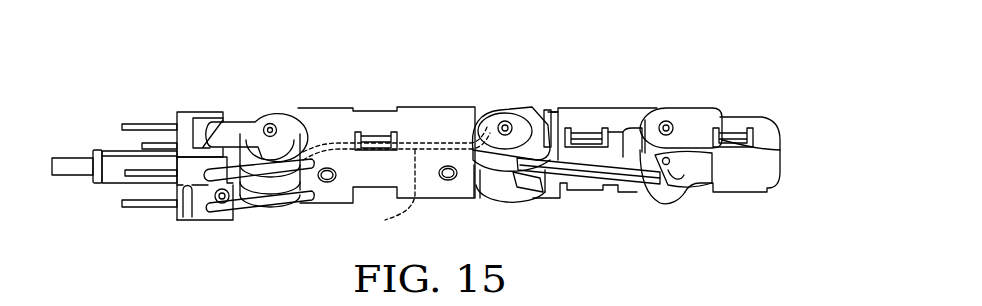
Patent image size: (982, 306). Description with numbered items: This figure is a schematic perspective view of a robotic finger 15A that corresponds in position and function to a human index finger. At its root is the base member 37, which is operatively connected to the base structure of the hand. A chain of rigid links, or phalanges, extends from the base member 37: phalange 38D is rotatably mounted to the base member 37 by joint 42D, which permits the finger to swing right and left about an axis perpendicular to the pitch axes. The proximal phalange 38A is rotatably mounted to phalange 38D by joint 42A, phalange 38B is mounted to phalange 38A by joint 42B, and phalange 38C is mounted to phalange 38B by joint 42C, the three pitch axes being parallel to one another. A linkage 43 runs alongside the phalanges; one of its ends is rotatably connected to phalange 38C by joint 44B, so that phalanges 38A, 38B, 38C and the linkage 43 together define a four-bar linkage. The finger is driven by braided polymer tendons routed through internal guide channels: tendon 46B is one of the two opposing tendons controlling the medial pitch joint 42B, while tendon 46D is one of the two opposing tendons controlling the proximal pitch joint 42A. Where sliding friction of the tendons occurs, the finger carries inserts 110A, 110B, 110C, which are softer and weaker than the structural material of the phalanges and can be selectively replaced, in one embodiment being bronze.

The linkage assembly 15A is at (779, 69).
The base member 37 is at (185, 127).
The proximal phalange 38A is at (440, 125).
The phalange 38B is at (585, 122).
The phalange 38C is at (763, 129).
The phalange 38D is at (240, 123).
The joint 42A is at (270, 127).
The joint 42B is at (503, 127).
The joint 42C is at (668, 127).
The joint 42D is at (222, 204).
The linkage 43 is at (620, 184).
The joint 44B is at (673, 160).
The tendon 46B is at (243, 178).
The tendon 46D is at (287, 207).
The insert 110A is at (277, 160).
The insert 110B is at (422, 175).
The insert 110C is at (545, 127).